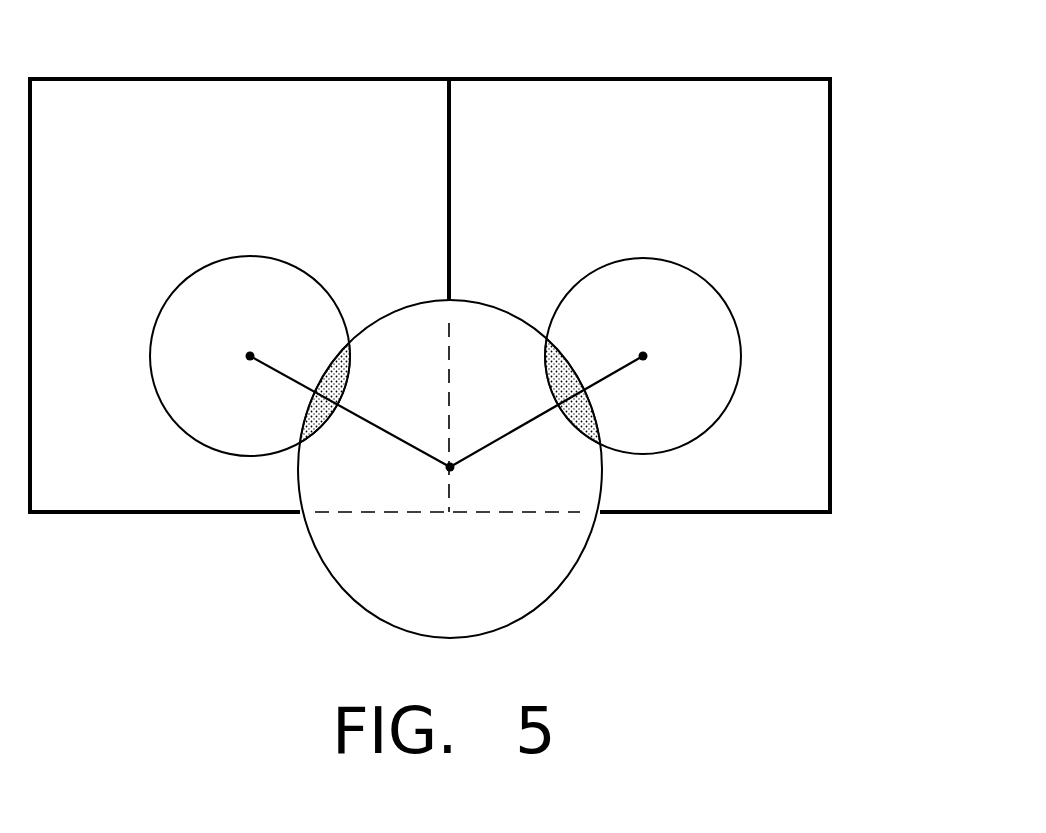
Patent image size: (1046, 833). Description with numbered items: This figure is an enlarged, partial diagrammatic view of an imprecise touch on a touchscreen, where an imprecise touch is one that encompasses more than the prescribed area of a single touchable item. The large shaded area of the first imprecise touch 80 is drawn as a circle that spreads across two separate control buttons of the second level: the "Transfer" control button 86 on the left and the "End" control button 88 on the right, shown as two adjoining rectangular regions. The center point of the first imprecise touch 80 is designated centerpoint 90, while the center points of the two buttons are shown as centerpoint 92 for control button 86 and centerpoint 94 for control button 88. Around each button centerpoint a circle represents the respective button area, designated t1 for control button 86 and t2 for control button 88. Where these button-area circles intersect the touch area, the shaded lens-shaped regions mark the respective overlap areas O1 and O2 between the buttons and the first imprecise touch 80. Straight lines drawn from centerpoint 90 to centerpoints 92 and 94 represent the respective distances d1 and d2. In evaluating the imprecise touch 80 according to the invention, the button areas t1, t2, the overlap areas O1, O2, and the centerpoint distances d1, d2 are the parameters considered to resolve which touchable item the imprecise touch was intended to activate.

The first imprecise touch 80 is at (463, 300).
The control button 86 is at (240, 85).
The control button 88 is at (630, 88).
The centerpoint of first imprecise touch 90 is at (450, 467).
The centerpoint of control button 92 is at (247, 352).
The centerpoint of control button 94 is at (648, 350).
The area of control button t1 is at (250, 258).
The area of control button t2 is at (645, 258).
The overlap area O1 is at (348, 354).
The overlap area O2 is at (550, 358).
The distance d1 is at (343, 412).
The distance d2 is at (543, 410).